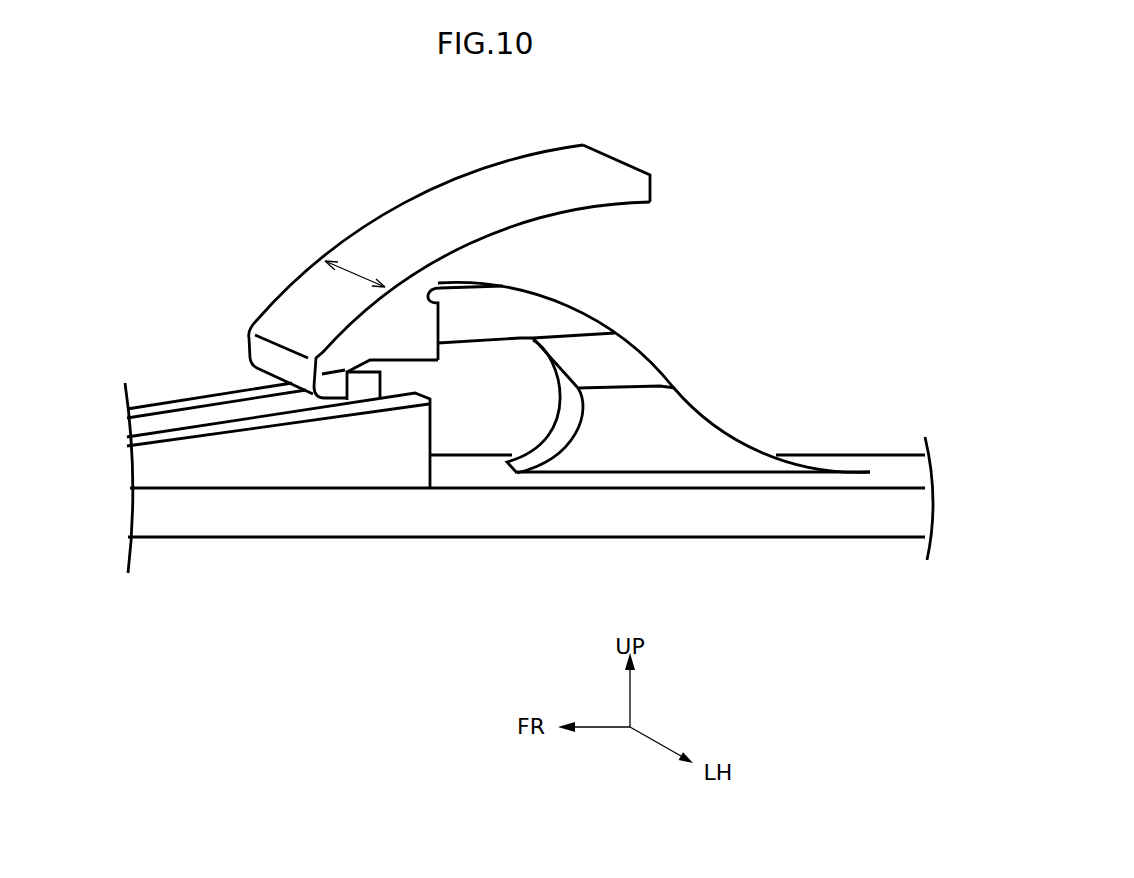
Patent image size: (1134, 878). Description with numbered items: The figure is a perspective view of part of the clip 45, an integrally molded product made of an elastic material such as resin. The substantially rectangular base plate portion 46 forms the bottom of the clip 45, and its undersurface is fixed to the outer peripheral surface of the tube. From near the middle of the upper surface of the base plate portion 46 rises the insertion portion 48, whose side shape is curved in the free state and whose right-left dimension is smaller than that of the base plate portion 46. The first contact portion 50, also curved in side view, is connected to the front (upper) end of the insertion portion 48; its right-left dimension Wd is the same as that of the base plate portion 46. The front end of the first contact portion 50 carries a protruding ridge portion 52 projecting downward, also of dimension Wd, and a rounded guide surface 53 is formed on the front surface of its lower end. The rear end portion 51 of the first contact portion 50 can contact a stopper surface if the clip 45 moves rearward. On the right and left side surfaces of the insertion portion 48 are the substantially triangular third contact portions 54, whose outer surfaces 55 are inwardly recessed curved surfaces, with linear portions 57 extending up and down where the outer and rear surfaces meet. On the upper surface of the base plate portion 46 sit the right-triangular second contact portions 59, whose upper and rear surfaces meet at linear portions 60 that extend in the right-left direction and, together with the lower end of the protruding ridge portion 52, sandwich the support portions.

The clip 45 is at (742, 227).
The base plate portion 46 is at (798, 517).
The insertion portion 48 is at (687, 442).
The first contact portion 50 is at (471, 188).
The rear end portion 51 is at (655, 190).
The protruding ridge portion 52 is at (330, 383).
The guide surface 53 is at (253, 378).
The third contact portions 54 is at (607, 337).
The outer surfaces 55 is at (620, 367).
The linear portions 57 is at (668, 373).
The second contact portions 59 is at (252, 413).
The linear portions 60 is at (380, 377).
The right-left dimension Wd is at (333, 383).